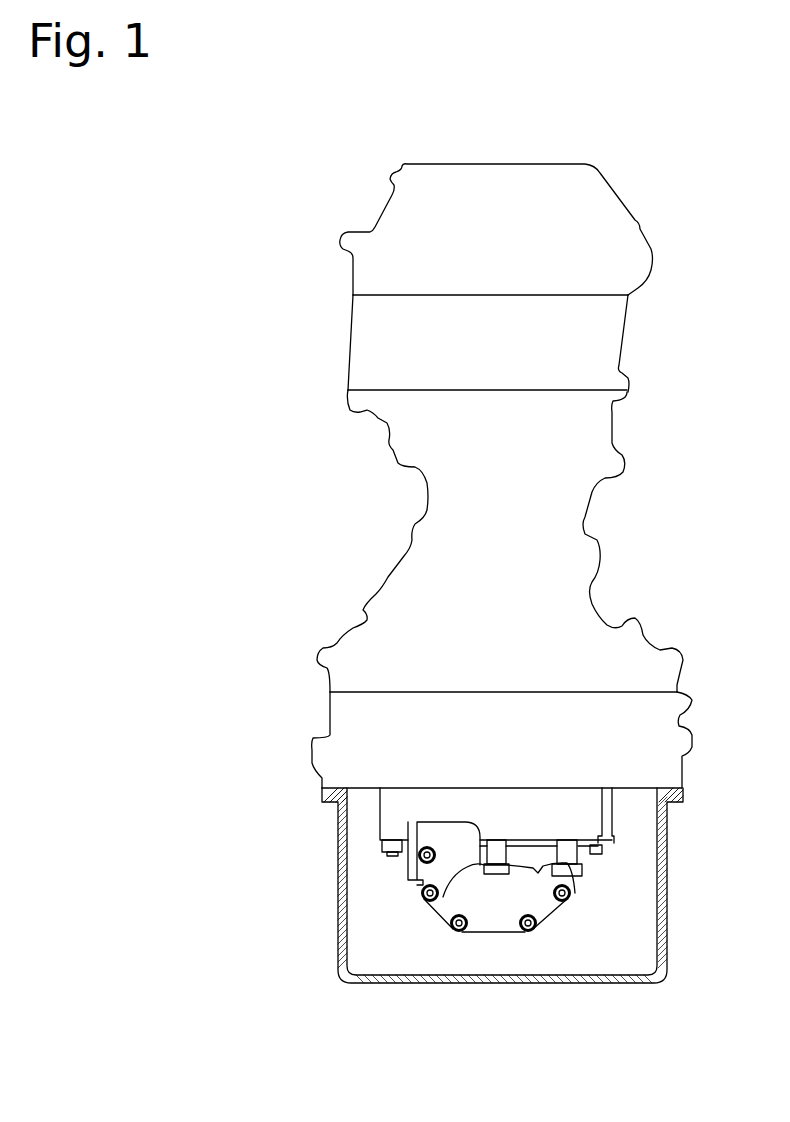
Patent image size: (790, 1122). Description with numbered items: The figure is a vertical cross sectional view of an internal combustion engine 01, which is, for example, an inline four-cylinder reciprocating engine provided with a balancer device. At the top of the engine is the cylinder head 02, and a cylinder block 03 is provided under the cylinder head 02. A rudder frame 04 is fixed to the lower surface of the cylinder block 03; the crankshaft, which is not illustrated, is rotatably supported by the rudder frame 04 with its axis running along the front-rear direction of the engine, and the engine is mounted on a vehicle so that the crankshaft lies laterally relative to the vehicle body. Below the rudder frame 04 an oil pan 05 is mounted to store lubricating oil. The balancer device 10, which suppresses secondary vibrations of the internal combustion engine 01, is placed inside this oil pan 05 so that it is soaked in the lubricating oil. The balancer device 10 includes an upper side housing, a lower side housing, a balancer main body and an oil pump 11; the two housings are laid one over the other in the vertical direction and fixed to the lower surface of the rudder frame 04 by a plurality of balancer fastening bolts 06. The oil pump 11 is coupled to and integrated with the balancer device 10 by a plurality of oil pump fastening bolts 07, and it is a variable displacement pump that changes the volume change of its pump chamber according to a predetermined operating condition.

The internal combustion engine 01 is at (648, 220).
The cylinder head 02 is at (583, 182).
The cylinder block 03 is at (603, 342).
The rudder frame 04 is at (618, 765).
The oil pan 05 is at (338, 860).
The balancer fastening bolt 06 is at (599, 856).
The oil pump fastening bolt 07 is at (413, 855).
The balancer device 10 is at (614, 834).
The oil pump 11 is at (448, 921).